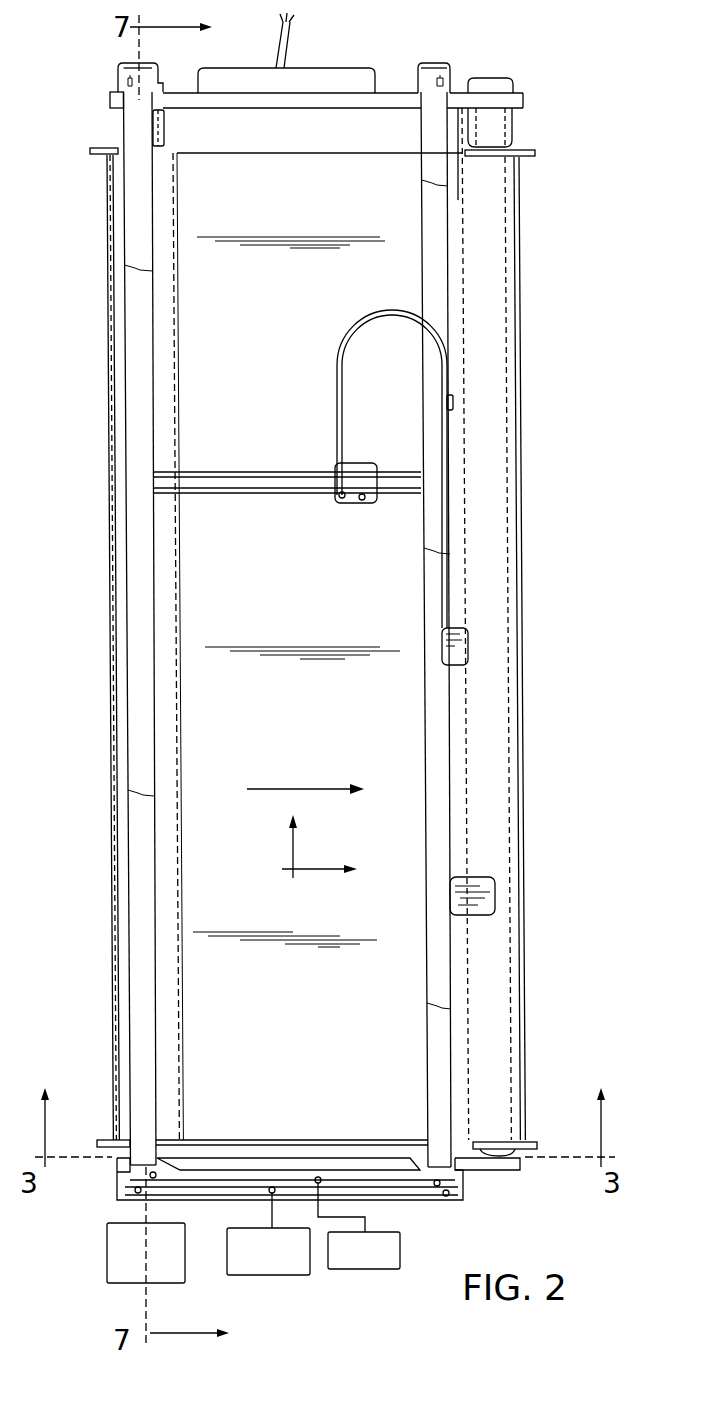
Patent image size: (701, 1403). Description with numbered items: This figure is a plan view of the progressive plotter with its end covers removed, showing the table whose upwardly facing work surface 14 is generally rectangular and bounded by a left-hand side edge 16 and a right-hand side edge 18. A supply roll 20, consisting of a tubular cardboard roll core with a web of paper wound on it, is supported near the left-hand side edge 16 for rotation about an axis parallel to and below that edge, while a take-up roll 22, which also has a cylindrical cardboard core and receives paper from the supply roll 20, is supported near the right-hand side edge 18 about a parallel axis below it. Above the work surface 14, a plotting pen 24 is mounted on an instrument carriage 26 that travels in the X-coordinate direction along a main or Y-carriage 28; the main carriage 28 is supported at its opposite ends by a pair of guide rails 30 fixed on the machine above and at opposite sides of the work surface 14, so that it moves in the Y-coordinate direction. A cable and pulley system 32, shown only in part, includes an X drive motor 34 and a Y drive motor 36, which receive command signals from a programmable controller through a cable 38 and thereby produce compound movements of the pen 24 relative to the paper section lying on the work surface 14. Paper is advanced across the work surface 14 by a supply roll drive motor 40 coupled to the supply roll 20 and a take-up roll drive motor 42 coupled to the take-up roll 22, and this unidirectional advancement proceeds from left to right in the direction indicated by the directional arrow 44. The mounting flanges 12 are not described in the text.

The mounting flanges 12 is at (97, 160).
The work surface 14 is at (385, 120).
The side edge 16 is at (150, 122).
The side edge 18 is at (468, 121).
The supply roll 20 is at (125, 617).
The take-up roll 22 is at (510, 773).
The plotting pen 24 is at (366, 502).
The instrument carriage 26 is at (360, 468).
The main carriage 28 is at (243, 495).
The guide rails 30 is at (428, 268).
The cable and pulley system 32 is at (402, 1200).
The X drive motor 34 is at (296, 1276).
The Y drive motor 36 is at (400, 1253).
The cable 38 is at (287, 48).
The supply roll drive motor 40 is at (107, 1240).
The take-up roll drive motor 42 is at (500, 112).
The directional arrow 44 is at (300, 788).